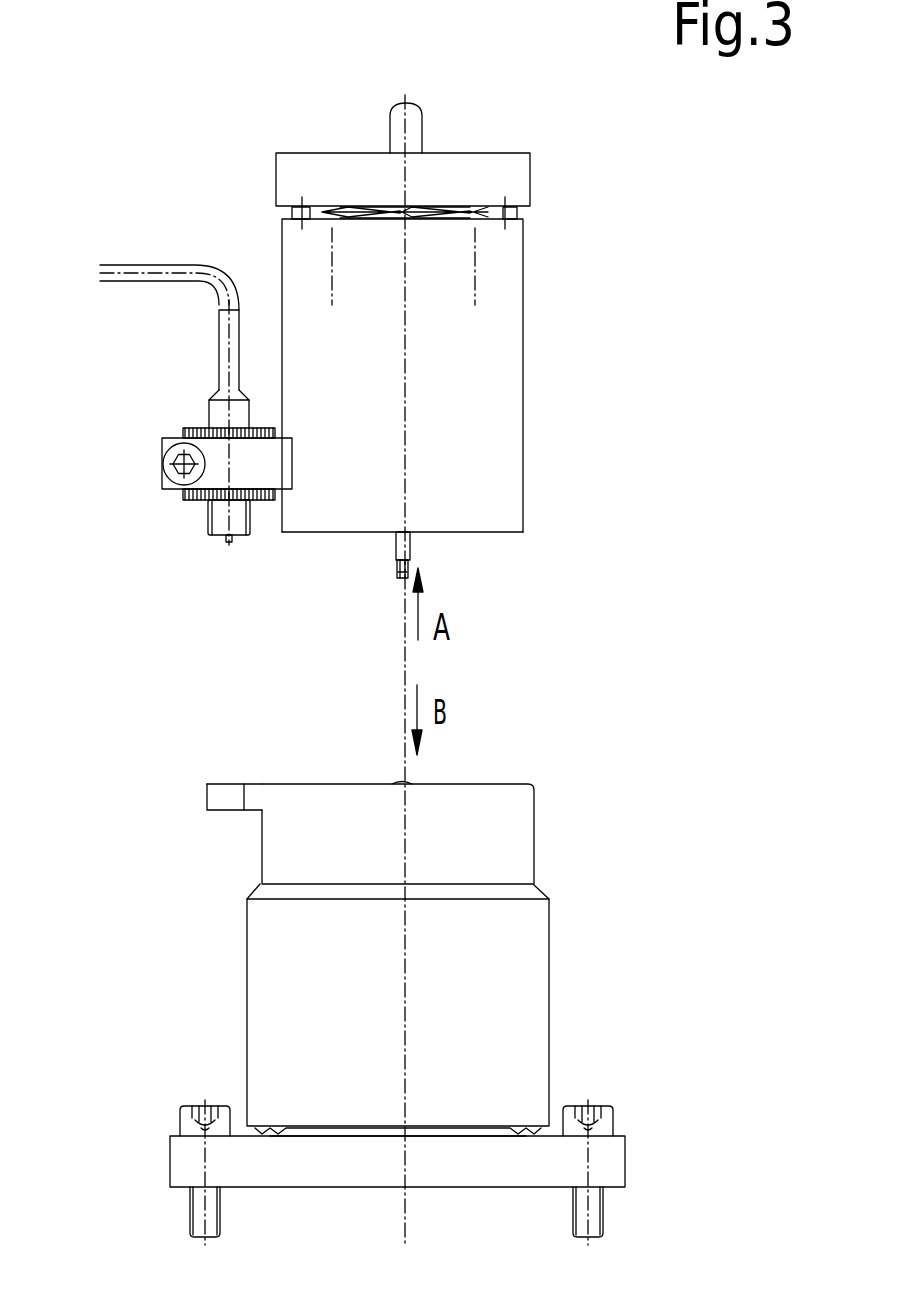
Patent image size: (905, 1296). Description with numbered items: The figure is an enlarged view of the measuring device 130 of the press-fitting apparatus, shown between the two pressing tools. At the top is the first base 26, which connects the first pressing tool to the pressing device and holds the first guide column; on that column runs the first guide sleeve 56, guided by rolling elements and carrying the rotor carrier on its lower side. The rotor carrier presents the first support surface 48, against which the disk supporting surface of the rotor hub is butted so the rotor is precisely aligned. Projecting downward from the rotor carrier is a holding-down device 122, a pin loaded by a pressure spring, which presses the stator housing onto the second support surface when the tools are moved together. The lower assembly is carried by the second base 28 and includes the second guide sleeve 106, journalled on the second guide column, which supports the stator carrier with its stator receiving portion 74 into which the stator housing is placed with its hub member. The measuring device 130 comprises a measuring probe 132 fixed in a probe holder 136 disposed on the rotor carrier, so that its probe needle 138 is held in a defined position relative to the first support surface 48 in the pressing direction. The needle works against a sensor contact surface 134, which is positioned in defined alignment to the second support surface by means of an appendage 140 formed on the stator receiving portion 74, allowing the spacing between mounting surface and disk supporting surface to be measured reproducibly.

The first base 26 is at (483, 180).
The first guide sleeve 56 is at (453, 338).
The first support surface 48 is at (483, 533).
The holding-down device 122 is at (410, 545).
The measuring device 130 is at (136, 465).
The probe holder 136 is at (222, 457).
The measuring probe 132 is at (222, 515).
The probe needle 138 is at (230, 545).
The sensor contact surface 134 is at (228, 782).
The appendage 140 is at (232, 798).
The stator receiving portion 74 is at (470, 827).
The second guide sleeve 106 is at (485, 981).
The second base 28 is at (610, 1158).